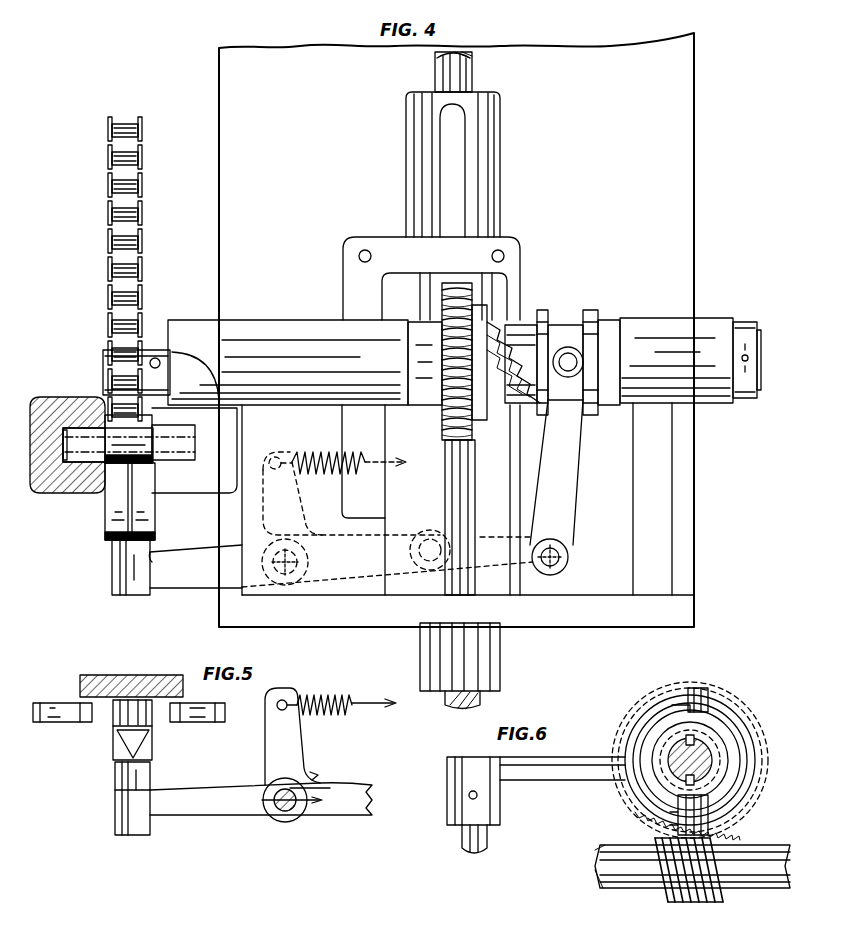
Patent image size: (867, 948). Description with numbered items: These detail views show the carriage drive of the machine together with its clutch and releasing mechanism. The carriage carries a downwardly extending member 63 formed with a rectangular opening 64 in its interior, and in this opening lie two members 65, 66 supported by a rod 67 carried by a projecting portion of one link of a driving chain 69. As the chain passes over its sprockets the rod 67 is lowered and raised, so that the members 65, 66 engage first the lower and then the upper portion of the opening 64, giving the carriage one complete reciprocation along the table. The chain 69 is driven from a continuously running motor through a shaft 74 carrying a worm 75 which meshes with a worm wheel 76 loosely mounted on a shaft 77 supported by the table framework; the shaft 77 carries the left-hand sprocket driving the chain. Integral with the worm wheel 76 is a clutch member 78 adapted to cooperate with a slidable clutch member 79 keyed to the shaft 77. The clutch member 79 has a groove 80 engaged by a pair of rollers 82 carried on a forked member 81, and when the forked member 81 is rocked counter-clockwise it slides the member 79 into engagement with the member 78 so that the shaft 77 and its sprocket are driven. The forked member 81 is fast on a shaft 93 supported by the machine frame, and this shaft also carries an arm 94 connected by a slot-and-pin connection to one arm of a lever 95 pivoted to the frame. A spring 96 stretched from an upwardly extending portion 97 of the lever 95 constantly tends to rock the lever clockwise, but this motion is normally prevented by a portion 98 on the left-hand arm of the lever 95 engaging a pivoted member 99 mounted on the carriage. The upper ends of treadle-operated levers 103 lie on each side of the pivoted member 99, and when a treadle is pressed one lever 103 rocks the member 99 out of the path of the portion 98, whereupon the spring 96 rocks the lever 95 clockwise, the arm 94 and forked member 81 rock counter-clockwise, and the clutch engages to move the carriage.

In FIG. 4, the downwardly extending member 63 is at (78, 485).
In FIG. 4, the rectangular opening 64 is at (65, 430).
In FIG. 4, the member 65 is at (78, 430).
In FIG. 4, the member 66 is at (190, 445).
In FIG. 4, the rod 67 is at (160, 450).
In FIG. 4, the driving chain 69 is at (138, 255).
In FIG. 4, the shaft 74 is at (446, 490).
In FIG. 6, the shaft 74 is at (758, 870).
In FIG. 6, the worm 75 is at (678, 900).
In FIG. 4, the worm wheel 76 is at (455, 295).
In FIG. 6, the worm wheel 76 is at (710, 805).
In FIG. 4, the shaft 77 is at (195, 382).
In FIG. 6, the shaft 77 is at (700, 750).
In FIG. 4, the clutch member 78 is at (498, 400).
In FIG. 4, the slidable clutch member 79 is at (522, 325).
In FIG. 4, the groove 80 is at (586, 325).
In FIG. 4, the forked member 81 is at (570, 475).
In FIG. 6, the forked member 81 is at (572, 772).
In FIG. 4, the rollers 82 is at (565, 347).
In FIG. 6, the rollers 82 is at (708, 715).
In FIG. 4, the shaft 93 is at (565, 555).
In FIG. 6, the shaft 93 is at (488, 840).
In FIG. 4, the arm 94 is at (488, 537).
In FIG. 4, the lever 95 is at (184, 552).
In FIG. 5, the lever 95 is at (255, 818).
In FIG. 5, the spring 96 is at (338, 706).
In FIG. 5, the upwardly extending portion 97 is at (268, 749).
In FIG. 4, the portion 98 is at (112, 545).
In FIG. 5, the portion 98 is at (120, 777).
In FIG. 5, the pivoted member 99 is at (118, 752).
In FIG. 5, the lever 103 is at (64, 718).